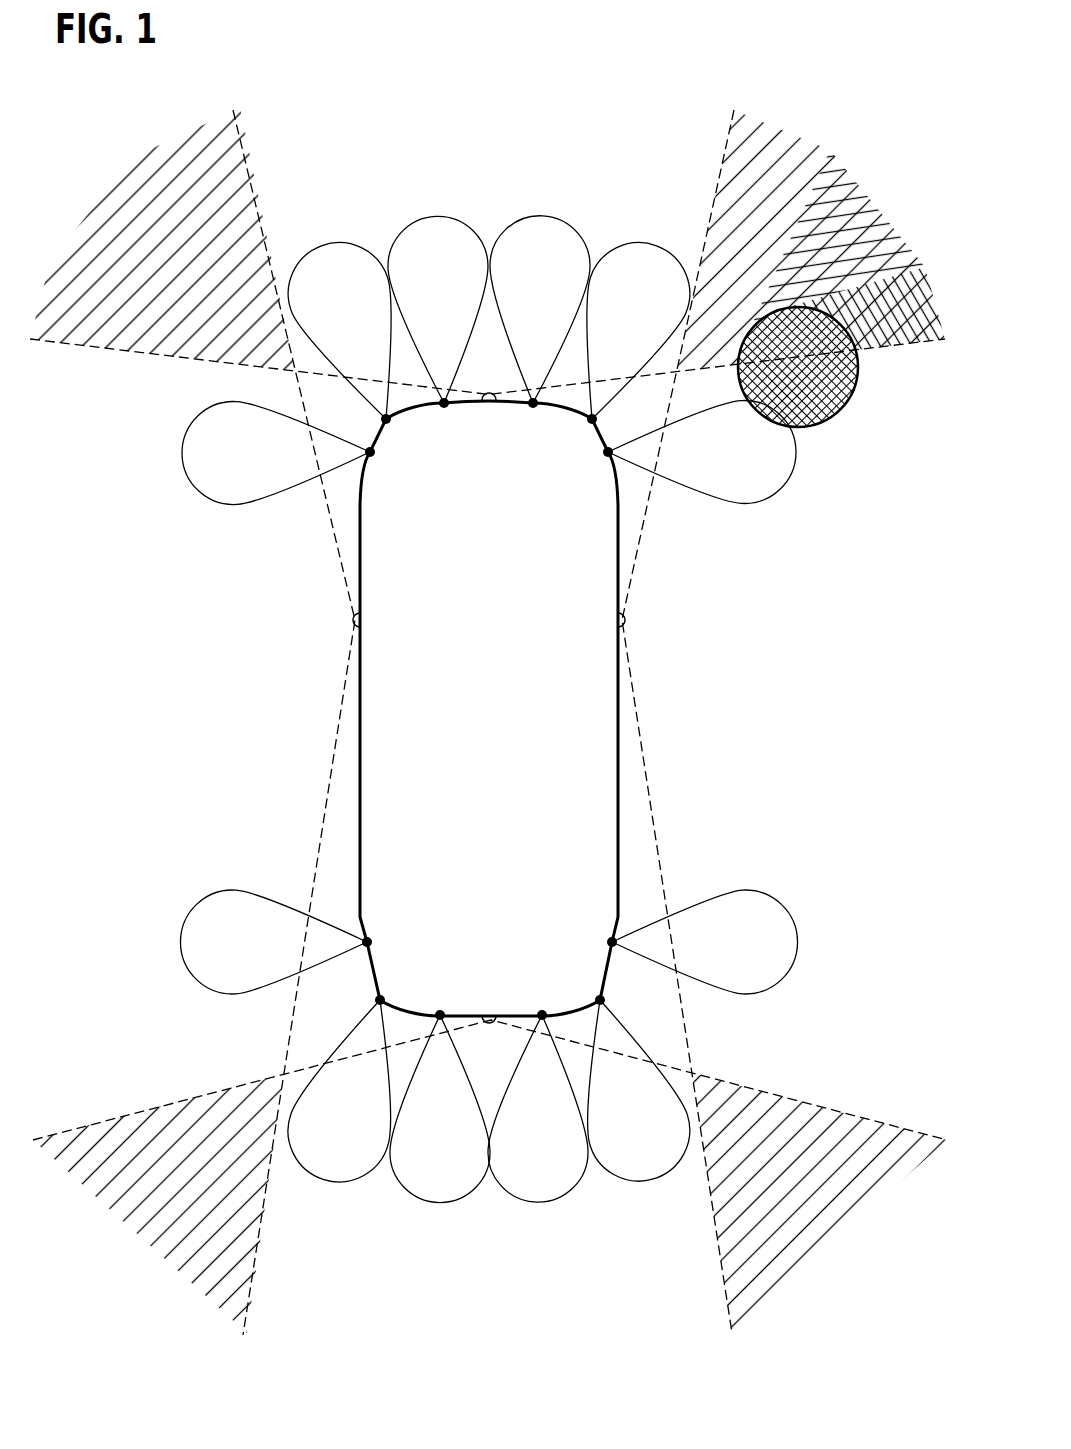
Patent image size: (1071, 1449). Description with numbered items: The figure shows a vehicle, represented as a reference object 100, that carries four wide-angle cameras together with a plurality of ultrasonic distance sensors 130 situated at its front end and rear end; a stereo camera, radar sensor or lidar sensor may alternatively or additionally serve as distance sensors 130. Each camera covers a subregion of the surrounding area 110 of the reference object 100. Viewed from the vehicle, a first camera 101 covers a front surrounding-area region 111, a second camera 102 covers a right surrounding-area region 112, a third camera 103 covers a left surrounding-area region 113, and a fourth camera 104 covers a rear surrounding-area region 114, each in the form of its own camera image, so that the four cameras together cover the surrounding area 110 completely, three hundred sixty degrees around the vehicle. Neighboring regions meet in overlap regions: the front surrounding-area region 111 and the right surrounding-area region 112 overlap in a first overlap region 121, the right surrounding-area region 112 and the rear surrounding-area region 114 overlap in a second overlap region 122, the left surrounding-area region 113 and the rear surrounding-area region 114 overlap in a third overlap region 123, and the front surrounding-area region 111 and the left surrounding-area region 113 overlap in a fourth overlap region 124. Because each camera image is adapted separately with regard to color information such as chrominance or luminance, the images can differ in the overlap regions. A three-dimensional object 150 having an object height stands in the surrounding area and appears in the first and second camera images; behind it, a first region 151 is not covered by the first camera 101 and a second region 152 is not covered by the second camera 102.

The reference object 100 is at (470, 691).
The first camera 101 is at (491, 388).
The second camera 102 is at (628, 620).
The third camera 103 is at (352, 620).
The fourth camera 104 is at (493, 1028).
The surrounding area 110 is at (473, 113).
The front surrounding-area region 111 is at (473, 198).
The right surrounding-area region 112 is at (774, 641).
The left surrounding-area region 113 is at (144, 631).
The rear surrounding-area region 114 is at (467, 1258).
The first overlap region 121 is at (765, 183).
The second overlap region 122 is at (805, 1215).
The third overlap region 123 is at (143, 1213).
The fourth overlap region 124 is at (143, 237).
The distance sensors 130 is at (592, 419).
The object 150 is at (815, 393).
The first region 151 is at (882, 318).
The second region 152 is at (865, 235).